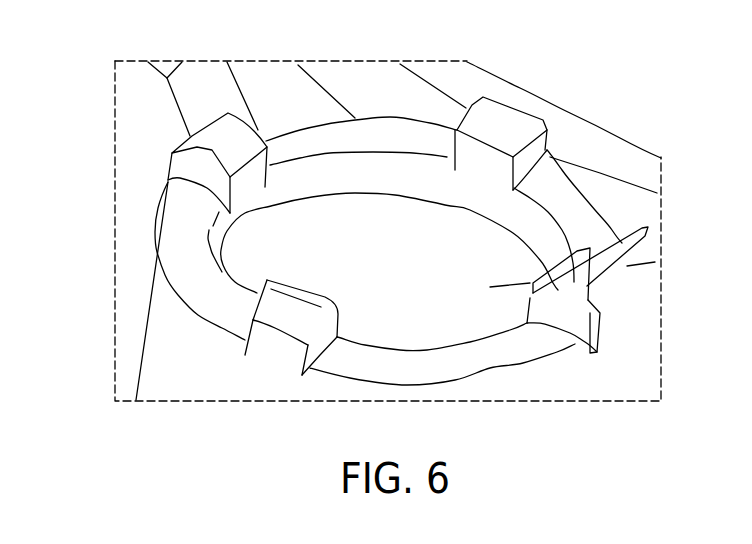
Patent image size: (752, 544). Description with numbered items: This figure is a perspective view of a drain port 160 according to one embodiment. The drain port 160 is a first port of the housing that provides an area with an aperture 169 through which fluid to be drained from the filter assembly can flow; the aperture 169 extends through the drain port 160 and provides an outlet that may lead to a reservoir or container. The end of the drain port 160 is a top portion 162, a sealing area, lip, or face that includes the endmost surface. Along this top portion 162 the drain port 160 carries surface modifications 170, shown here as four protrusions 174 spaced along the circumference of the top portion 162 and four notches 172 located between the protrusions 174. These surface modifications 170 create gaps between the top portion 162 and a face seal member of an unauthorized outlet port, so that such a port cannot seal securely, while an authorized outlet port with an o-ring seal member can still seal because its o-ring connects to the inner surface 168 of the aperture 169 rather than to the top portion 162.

The drain port 160 is at (614, 108).
The top portion 162 is at (592, 227).
The inner surface 168 is at (500, 250).
The aperture 169 is at (582, 297).
The surface modifications 170 is at (190, 140).
The notches 172 is at (183, 260).
The protrusions 174 is at (183, 168).